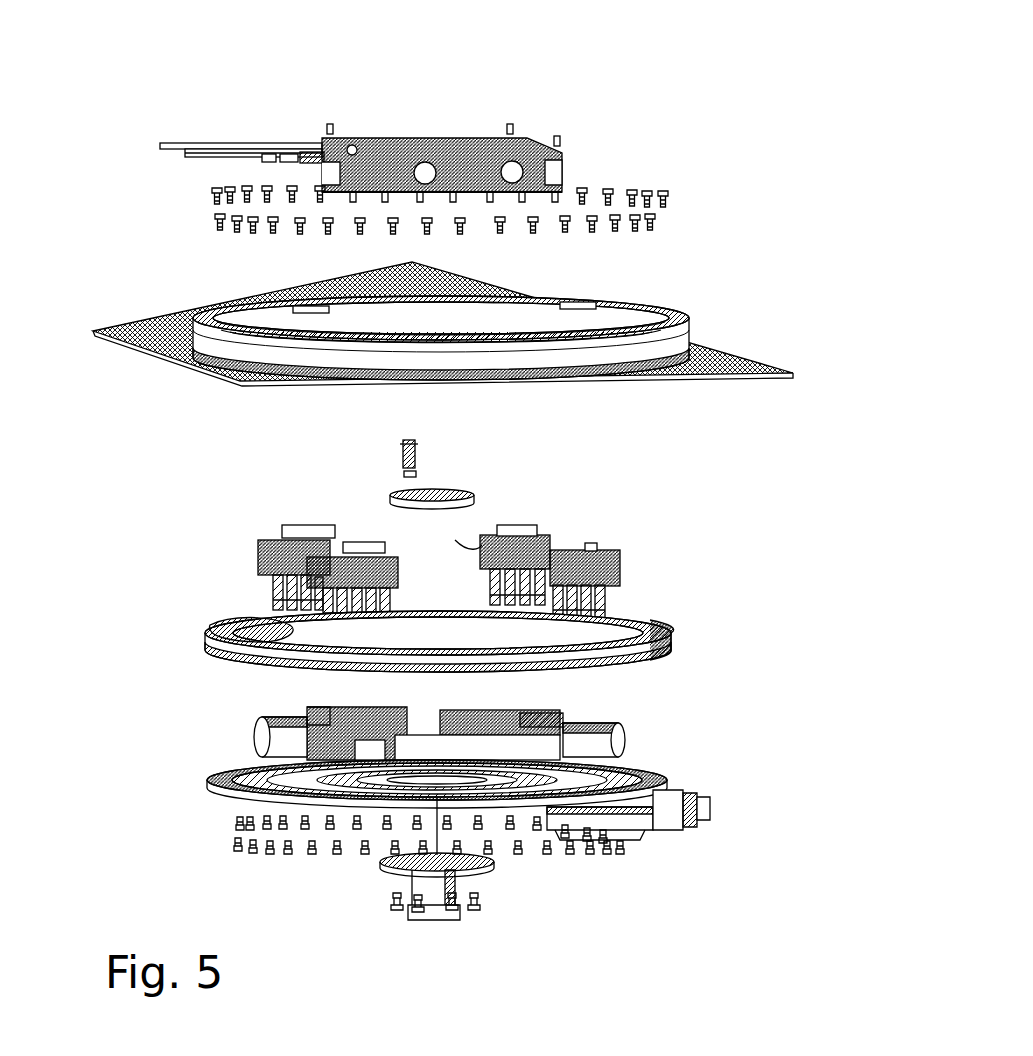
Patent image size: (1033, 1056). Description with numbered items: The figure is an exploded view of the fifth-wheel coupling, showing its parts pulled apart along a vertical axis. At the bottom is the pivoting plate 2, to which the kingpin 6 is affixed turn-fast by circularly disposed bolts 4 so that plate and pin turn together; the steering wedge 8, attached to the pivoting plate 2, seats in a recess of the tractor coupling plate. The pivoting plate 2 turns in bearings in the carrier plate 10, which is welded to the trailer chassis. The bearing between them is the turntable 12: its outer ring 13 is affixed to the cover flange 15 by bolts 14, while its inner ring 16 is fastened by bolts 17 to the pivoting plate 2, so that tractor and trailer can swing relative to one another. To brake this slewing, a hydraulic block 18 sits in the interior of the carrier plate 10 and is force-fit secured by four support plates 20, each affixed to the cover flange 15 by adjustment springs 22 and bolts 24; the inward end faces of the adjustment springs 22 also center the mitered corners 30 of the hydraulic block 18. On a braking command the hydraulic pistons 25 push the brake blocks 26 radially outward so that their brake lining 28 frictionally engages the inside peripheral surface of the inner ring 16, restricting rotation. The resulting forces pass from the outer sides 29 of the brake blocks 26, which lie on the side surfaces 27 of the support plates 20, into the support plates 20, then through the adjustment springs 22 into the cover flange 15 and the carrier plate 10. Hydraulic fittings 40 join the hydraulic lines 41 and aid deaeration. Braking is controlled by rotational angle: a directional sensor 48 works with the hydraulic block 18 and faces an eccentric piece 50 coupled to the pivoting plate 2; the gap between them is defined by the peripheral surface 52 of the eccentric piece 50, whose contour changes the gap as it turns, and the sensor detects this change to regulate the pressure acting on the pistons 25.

The pivoting plate 2 is at (445, 916).
The bolts 4 is at (394, 920).
The kingpin 6 is at (480, 870).
The steering wedge 8 is at (712, 806).
The carrier plate 10 is at (793, 374).
The turntable 12 is at (674, 626).
The outer ring 13 is at (670, 640).
The bolts 14 is at (633, 195).
The cover flange 15 is at (627, 318).
The inner ring 16 is at (280, 628).
The bolts 17 is at (545, 856).
The hydraulic block 18 is at (354, 145).
The support plates 20 is at (300, 548).
The adjustment springs 22 is at (265, 556).
The bolts 24 is at (275, 600).
The hydraulic pistons 25 is at (292, 718).
The brake blocks 26 is at (440, 137).
The side surfaces 27 is at (455, 540).
The brake lining 28 is at (258, 732).
The outer sides 29 is at (335, 757).
The mitered corners 30 is at (563, 172).
The hydraulic fittings 40 is at (262, 148).
The hydraulic lines 41 is at (183, 143).
The directional sensor 48 is at (300, 151).
The eccentric piece 50 is at (483, 494).
The peripheral surface 52 is at (390, 500).